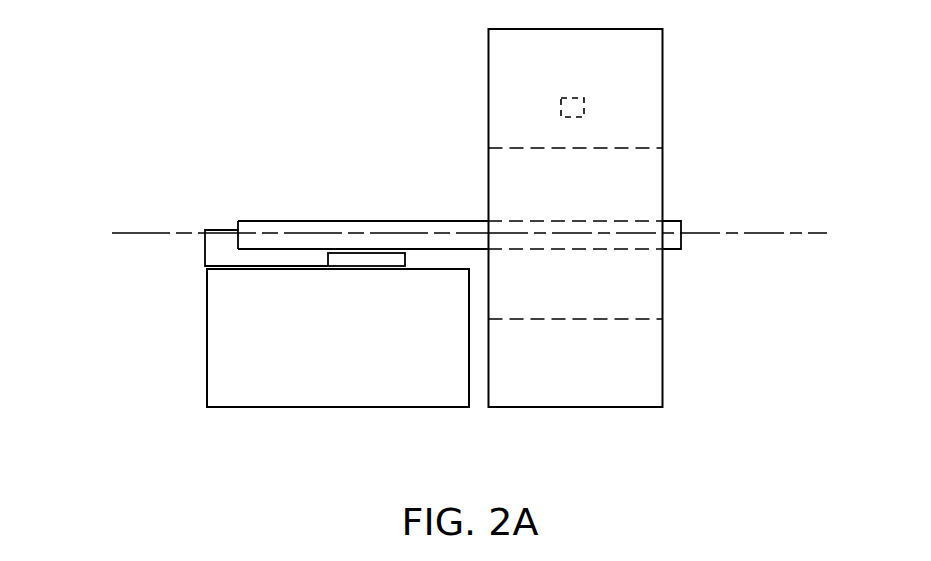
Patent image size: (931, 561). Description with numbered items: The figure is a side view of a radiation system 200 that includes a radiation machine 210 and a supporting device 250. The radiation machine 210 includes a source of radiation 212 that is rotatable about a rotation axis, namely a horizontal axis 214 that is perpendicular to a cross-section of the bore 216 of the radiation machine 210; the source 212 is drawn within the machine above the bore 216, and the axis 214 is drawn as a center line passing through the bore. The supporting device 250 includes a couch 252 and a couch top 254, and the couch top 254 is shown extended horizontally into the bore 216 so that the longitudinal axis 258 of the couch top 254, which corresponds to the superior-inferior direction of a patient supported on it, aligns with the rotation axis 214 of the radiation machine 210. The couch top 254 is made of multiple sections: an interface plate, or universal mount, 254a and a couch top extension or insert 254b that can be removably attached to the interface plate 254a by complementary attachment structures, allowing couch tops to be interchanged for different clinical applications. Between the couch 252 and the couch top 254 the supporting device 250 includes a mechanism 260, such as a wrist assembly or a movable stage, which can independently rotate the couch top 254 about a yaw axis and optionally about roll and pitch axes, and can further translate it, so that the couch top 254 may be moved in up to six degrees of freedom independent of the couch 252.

The radiation system 200 is at (138, 105).
The radiation machine 210 is at (682, 145).
The source of radiation 212 is at (564, 96).
The horizontal axis 214 is at (800, 232).
The bore 216 is at (623, 147).
The supporting device 250 is at (170, 407).
The couch 252 is at (206, 340).
The couch top 254 is at (386, 220).
The interface plate 254a is at (209, 229).
The couch top extension 254b is at (291, 220).
The longitudinal axis 258 is at (131, 232).
The mechanism 260 is at (375, 258).